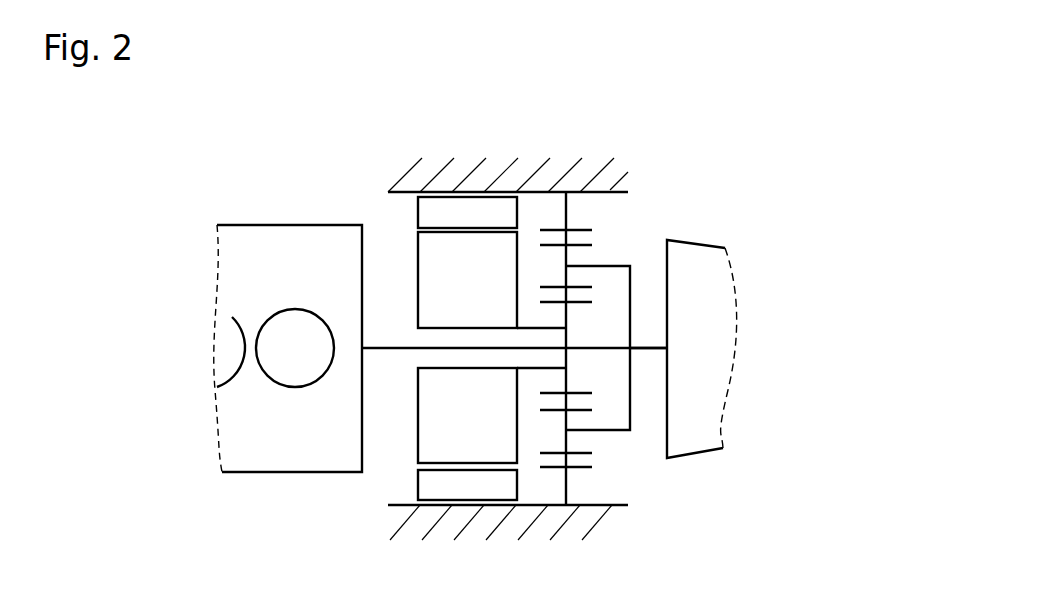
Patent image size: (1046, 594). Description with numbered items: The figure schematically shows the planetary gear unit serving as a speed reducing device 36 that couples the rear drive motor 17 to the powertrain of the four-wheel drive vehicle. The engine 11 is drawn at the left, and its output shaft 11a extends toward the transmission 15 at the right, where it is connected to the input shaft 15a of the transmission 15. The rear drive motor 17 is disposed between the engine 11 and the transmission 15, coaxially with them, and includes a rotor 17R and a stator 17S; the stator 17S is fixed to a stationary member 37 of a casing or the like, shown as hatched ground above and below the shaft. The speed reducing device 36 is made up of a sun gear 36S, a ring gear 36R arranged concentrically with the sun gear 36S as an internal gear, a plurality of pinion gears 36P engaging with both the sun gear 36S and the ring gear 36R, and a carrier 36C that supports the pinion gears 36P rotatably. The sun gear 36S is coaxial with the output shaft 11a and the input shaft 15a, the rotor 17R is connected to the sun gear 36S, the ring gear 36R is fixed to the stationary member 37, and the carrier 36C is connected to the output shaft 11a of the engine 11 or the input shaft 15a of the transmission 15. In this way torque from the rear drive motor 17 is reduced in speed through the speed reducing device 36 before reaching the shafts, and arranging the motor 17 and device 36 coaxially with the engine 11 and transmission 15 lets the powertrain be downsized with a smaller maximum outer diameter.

The engine 11 is at (280, 219).
The output shaft 11a is at (385, 350).
The transmission 15 is at (724, 224).
The input shaft 15a is at (653, 350).
The rear drive motor 17 is at (450, 305).
The stator 17S is at (450, 210).
The rotor 17R is at (420, 310).
The planetary gear unit 36 is at (656, 333).
The pinion gears 36P is at (556, 285).
The sun gear 36S is at (582, 305).
The ring gear 36R is at (577, 467).
The carrier 36C is at (630, 295).
The stationary member 37 is at (547, 191).